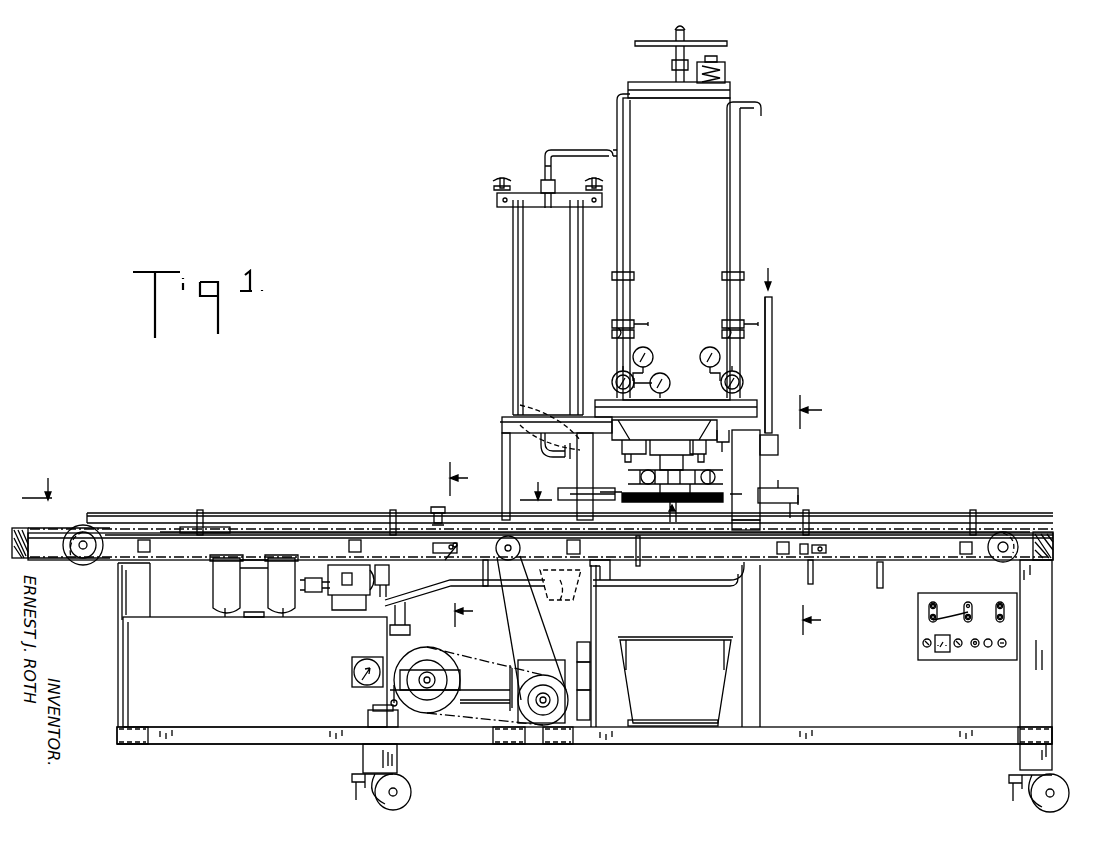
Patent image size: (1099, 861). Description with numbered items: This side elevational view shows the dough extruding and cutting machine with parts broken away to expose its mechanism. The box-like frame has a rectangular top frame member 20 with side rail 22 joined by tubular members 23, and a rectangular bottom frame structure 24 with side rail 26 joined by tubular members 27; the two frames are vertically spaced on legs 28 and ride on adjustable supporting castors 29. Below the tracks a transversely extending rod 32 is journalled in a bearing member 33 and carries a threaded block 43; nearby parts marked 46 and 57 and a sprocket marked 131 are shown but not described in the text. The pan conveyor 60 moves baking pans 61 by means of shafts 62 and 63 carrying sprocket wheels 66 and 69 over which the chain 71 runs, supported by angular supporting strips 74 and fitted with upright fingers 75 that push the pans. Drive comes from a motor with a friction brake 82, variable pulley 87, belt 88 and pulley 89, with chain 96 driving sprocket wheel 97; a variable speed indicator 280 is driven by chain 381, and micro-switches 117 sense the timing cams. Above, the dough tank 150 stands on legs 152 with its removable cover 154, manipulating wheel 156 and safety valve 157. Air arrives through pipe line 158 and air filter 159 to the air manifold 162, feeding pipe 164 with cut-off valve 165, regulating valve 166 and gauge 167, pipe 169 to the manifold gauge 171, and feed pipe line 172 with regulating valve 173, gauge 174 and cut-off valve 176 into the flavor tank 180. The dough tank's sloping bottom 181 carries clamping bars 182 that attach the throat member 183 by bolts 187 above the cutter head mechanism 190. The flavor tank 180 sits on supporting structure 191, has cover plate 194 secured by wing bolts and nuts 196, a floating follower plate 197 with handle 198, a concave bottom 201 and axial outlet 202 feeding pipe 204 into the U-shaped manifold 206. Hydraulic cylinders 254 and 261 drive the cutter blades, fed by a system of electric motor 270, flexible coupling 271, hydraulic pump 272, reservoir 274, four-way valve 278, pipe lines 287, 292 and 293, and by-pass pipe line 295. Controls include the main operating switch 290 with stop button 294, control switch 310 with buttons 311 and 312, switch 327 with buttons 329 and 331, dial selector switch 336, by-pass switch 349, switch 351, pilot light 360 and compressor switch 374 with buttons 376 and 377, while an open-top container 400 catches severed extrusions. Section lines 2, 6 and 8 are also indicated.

The rectangular top frame member 20 is at (1047, 522).
The side rail 22 is at (44, 553).
The tubular members 23 is at (148, 552).
The rectangular bottom frame structure 24 is at (266, 748).
The side rail 26 is at (194, 733).
The tubular members 27 is at (133, 746).
The legs 28 is at (132, 601).
The supporting castors 29 is at (410, 794).
The transversely extending rod 32 is at (810, 549).
The bearing member 33 is at (457, 549).
The block 43 is at (434, 548).
The support post 46 is at (485, 563).
The push button 57 is at (438, 507).
The pan conveyor 60 is at (188, 519).
The baking pans 61 is at (236, 518).
The shaft 62 is at (70, 542).
The shaft 63 is at (997, 538).
The sprocket wheel 66 is at (83, 540).
The sprocket wheel 69 is at (1006, 545).
The chain 71 is at (380, 530).
The angular supporting strips 74 is at (258, 530).
The upright fingers 75 is at (200, 512).
The friction brake 82 is at (440, 714).
The variable pulley 87 is at (590, 669).
The belt 88 is at (588, 697).
The pulley 89 is at (588, 649).
The chain 96 is at (470, 677).
The sprocket wheel 97 is at (436, 667).
The micro-switches 117 is at (368, 717).
The drive sprocket 131 is at (531, 618).
The dough tank 150 is at (692, 191).
The legs 152 is at (760, 435).
The pressure sealing removable cover 154 is at (650, 84).
The manipulating wheel 156 is at (728, 42).
The pressure release safety valve 157 is at (726, 73).
The pipe line 158 is at (772, 330).
The air filter 159 is at (766, 469).
The air manifold 162 is at (746, 406).
The feed pipe 164 is at (735, 174).
The cut-off valve 165 is at (772, 306).
The pressure regulating valve 166 is at (743, 385).
The pressure gauge 167 is at (712, 342).
The pipe 169 is at (658, 386).
The manifold pressure gauge 171 is at (660, 373).
The feed pipe line 172 is at (630, 229).
The pressure regulating valve 173 is at (614, 382).
The pressure gauge 174 is at (643, 348).
The cut-off valve 176 is at (626, 304).
The flavor tank 180 is at (570, 299).
The sloping bottom 181 is at (622, 447).
The clamping bars 182 is at (654, 456).
The restricted throat member 183 is at (664, 445).
The bolts 187 is at (716, 451).
The cutter head mechanism 190 is at (672, 534).
The supporting structure 191 is at (506, 424).
The top cover plate 194 is at (518, 185).
The wing bolts and nuts 196 is at (500, 180).
The plate 197 is at (520, 240).
The handle 198 is at (502, 444).
The concave bottom 201 is at (502, 429).
The axial outlet 202 is at (540, 402).
The pipe 204 is at (562, 448).
The U-shaped manifold 206 is at (764, 475).
The cylinder 254 is at (568, 497).
The cylinder 261 is at (798, 489).
The electric motor 270 is at (255, 580).
The flexible coupling 271 is at (315, 592).
The hydraulic pump 272 is at (353, 598).
The reservoir 274 is at (262, 681).
The spring return four-way valve 278 is at (404, 616).
The variable speed indicator 280 is at (351, 672).
The pipe line 287 is at (679, 588).
The main operating switch 290 is at (916, 641).
The start button 292 is at (628, 586).
The pipe line 293 is at (717, 594).
The stop button 294 is at (1006, 643).
The by-pass pipe line 295 is at (382, 585).
The manual control switch 310 is at (931, 598).
The starter button 311 is at (933, 601).
The stop button 312 is at (930, 616).
The switch 327 is at (970, 616).
The stop button 329 is at (968, 602).
The starter button 331 is at (933, 620).
The dial selector switch 336 is at (938, 654).
The single pole by-pass switch 349 is at (922, 646).
The single pole switch 351 is at (957, 648).
The pilot light 360 is at (974, 648).
The switch 374 is at (1004, 606).
The starter button 376 is at (1001, 601).
The stop button 377 is at (1004, 612).
The chain 381 is at (390, 690).
The removable open-top container 400 is at (693, 673).
The section line 2 is at (287, 486).
The section line 6 is at (462, 544).
The section line 8 is at (816, 516).